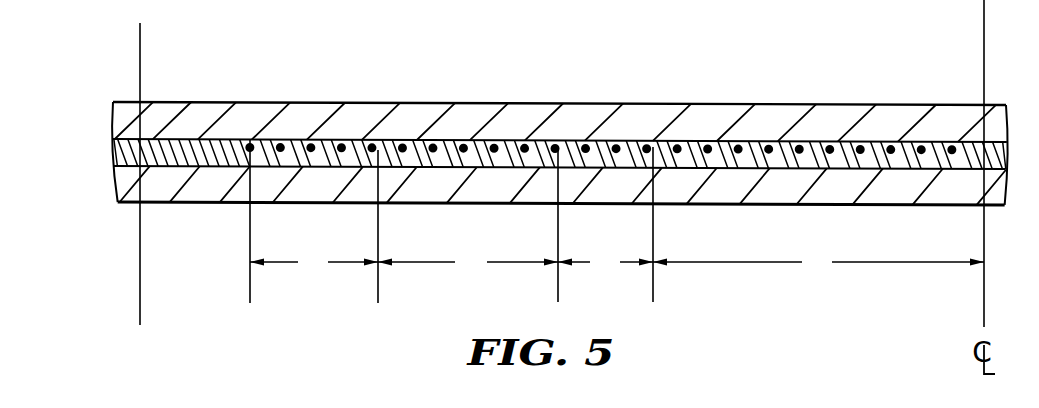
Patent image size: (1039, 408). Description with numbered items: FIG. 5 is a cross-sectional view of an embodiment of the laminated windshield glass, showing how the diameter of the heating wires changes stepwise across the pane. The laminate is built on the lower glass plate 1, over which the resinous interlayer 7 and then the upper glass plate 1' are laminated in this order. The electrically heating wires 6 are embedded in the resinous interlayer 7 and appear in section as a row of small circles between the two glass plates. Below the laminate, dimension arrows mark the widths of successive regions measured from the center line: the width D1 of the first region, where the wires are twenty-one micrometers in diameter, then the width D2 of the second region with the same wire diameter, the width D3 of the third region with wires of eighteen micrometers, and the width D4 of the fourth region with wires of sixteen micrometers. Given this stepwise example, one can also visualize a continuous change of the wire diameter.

The upper glass plate 1' is at (560, 114).
The lower glass plate 1 is at (561, 231).
The resinous interlayer 7 is at (162, 168).
The electrically heating wires 6 is at (712, 140).
The width of region S1 D1 is at (818, 267).
The width of region S2 D2 is at (605, 267).
The width of region S3 D3 is at (468, 267).
The width of region S4 D4 is at (314, 267).